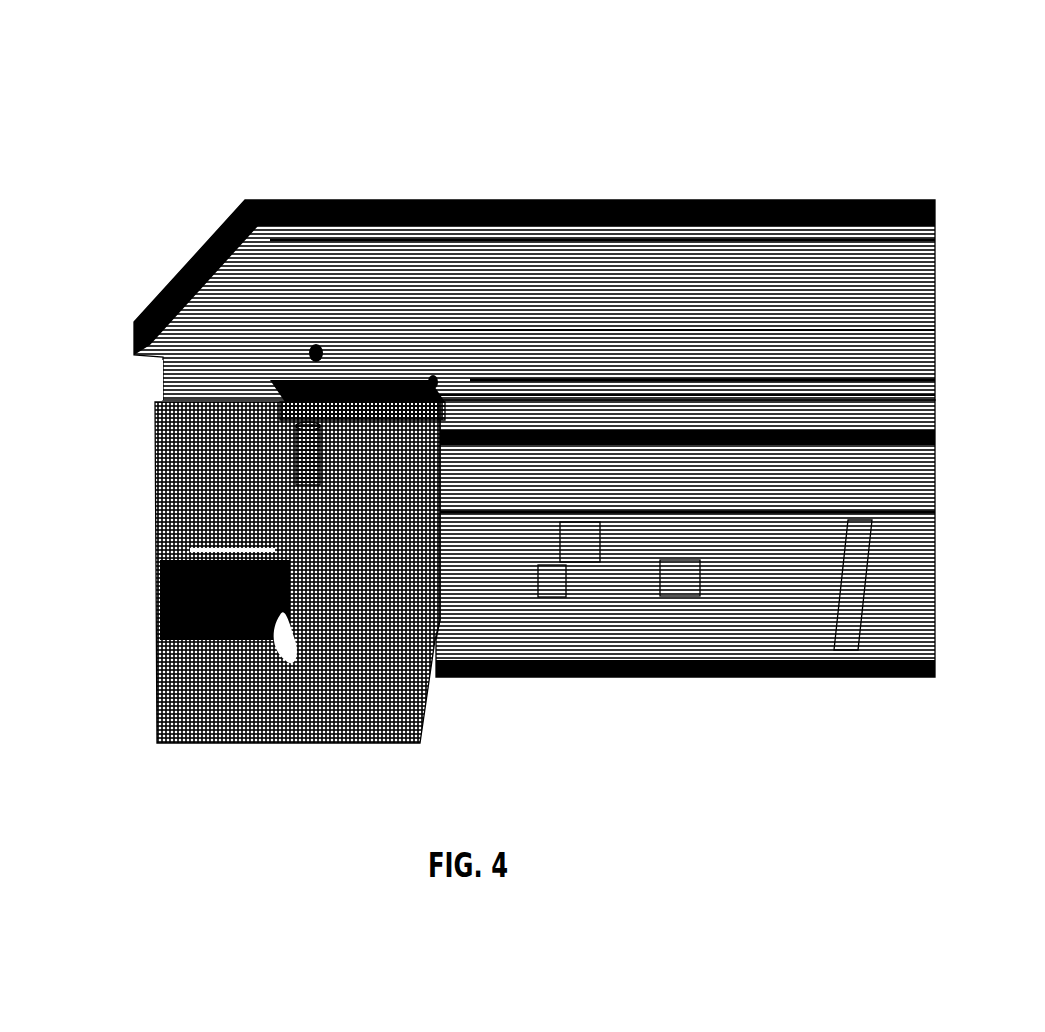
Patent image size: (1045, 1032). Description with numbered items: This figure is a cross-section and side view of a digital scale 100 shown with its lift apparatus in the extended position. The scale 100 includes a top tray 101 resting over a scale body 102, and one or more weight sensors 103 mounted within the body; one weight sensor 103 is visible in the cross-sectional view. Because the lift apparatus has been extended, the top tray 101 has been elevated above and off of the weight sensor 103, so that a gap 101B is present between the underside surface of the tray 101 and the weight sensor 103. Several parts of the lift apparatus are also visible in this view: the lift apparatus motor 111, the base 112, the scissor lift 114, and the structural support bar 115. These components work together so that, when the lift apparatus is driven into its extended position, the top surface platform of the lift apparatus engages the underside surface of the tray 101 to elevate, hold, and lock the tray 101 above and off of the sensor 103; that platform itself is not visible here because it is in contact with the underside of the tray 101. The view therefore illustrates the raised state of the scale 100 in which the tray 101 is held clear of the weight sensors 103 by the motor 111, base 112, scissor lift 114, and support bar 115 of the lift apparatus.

The scale 100 is at (476, 402).
The top tray 101 is at (186, 349).
The gap 101B is at (276, 433).
The scale body 102 is at (383, 477).
The weight sensor 103 is at (284, 473).
The lift apparatus motor 111 is at (581, 556).
The base 112 is at (569, 580).
The scissor lift 114 is at (662, 582).
The structural support bar 115 is at (824, 601).